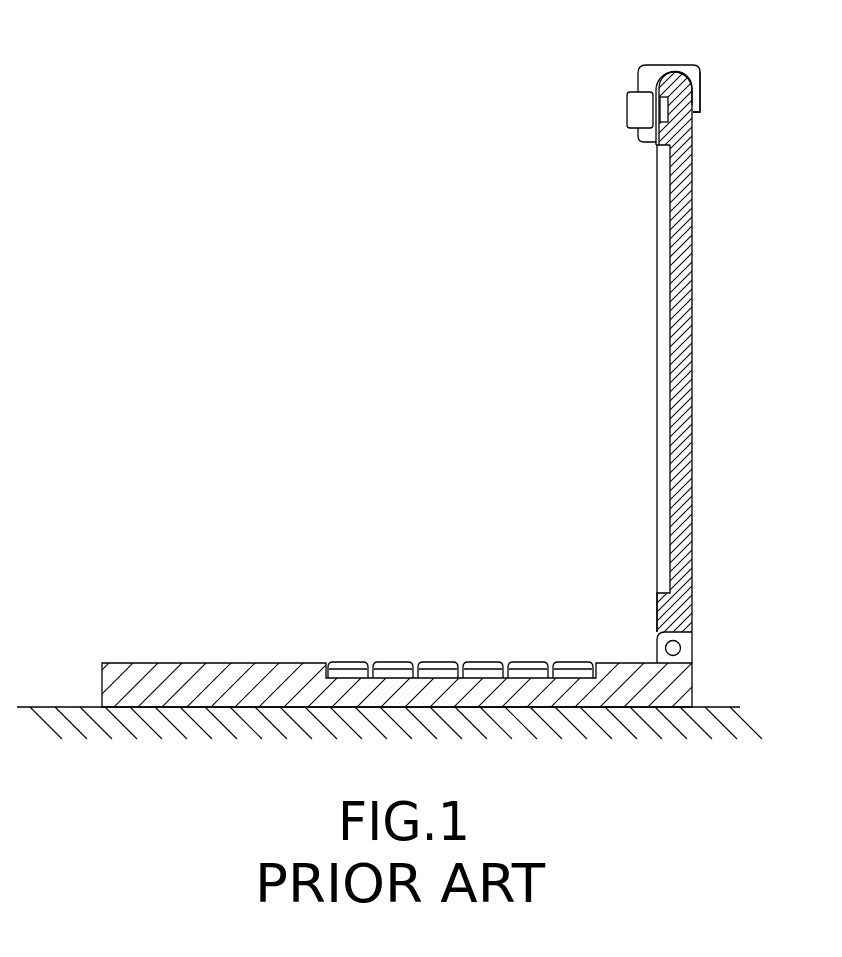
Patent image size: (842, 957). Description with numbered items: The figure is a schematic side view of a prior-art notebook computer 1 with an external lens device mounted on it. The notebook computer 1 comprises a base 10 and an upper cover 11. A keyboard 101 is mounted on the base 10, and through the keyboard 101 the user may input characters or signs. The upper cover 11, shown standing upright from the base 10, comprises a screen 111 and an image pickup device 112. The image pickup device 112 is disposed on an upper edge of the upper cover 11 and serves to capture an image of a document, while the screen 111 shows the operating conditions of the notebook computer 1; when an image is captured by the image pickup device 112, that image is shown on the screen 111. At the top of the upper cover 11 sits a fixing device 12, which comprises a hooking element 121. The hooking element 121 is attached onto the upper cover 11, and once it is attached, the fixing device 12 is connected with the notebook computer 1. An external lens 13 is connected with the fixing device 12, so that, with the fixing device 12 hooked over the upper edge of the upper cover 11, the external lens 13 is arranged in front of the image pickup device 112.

The notebook computer 1 is at (423, 364).
The base 10 is at (403, 657).
The keyboard 101 is at (392, 660).
The upper cover 11 is at (680, 364).
The screen 111 is at (665, 395).
The image pickup device 112 is at (693, 118).
The fixing device 12 is at (679, 83).
The hooking element 121 is at (699, 92).
The external lens 13 is at (640, 110).